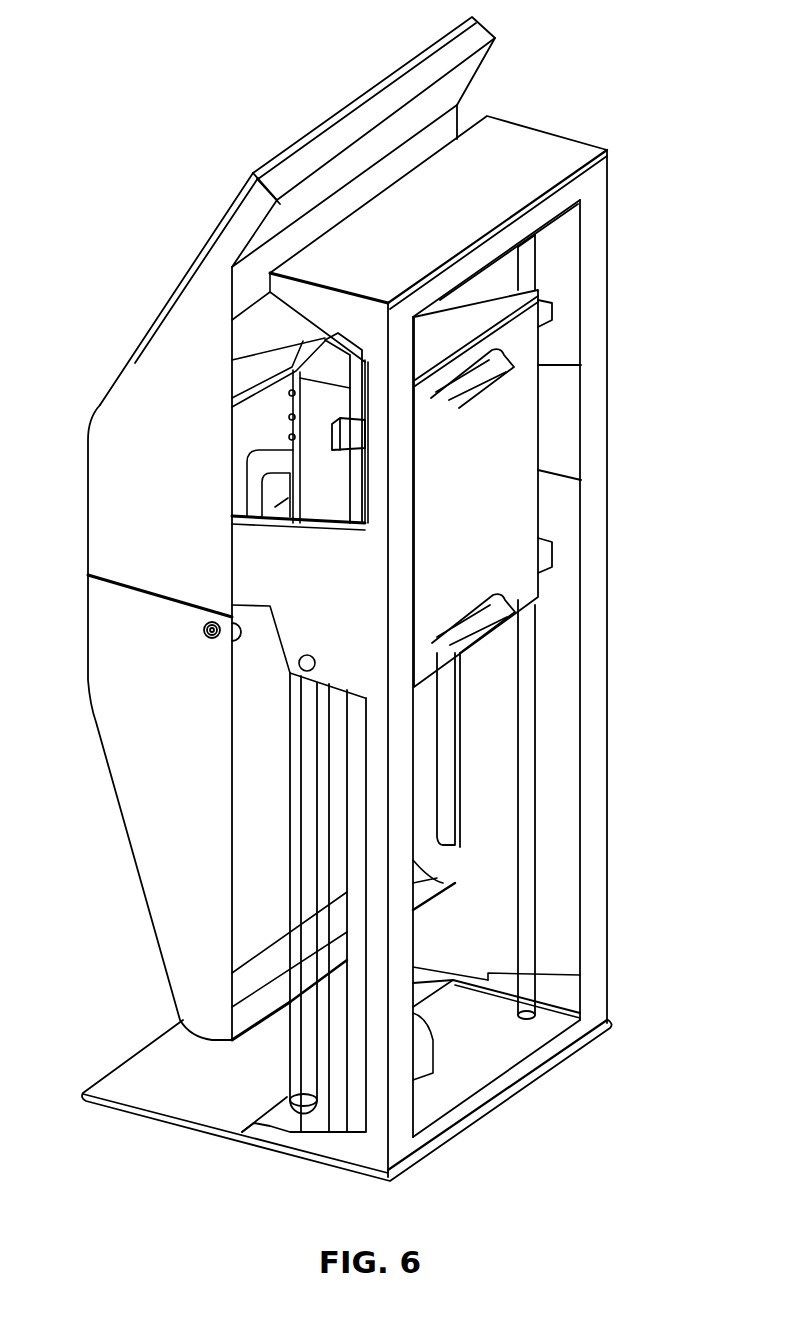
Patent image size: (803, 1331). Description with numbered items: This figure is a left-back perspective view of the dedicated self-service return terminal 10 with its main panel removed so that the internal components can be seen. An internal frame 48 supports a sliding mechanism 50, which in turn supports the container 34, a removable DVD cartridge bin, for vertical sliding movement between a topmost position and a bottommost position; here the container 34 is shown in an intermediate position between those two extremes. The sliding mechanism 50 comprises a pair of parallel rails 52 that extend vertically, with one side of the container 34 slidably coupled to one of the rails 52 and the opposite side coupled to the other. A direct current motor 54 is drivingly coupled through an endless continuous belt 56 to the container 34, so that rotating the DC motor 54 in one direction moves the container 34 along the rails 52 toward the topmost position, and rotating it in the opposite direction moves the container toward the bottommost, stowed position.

The dedicated self-service return terminal 10 is at (100, 92).
The container 34 is at (517, 500).
The internal frame 48 is at (597, 378).
The sliding mechanism 50 is at (476, 646).
The parallel rails 52 is at (353, 378).
The direct current (DC) motor 54 is at (423, 1067).
The endless continuous belt 56 is at (293, 1038).